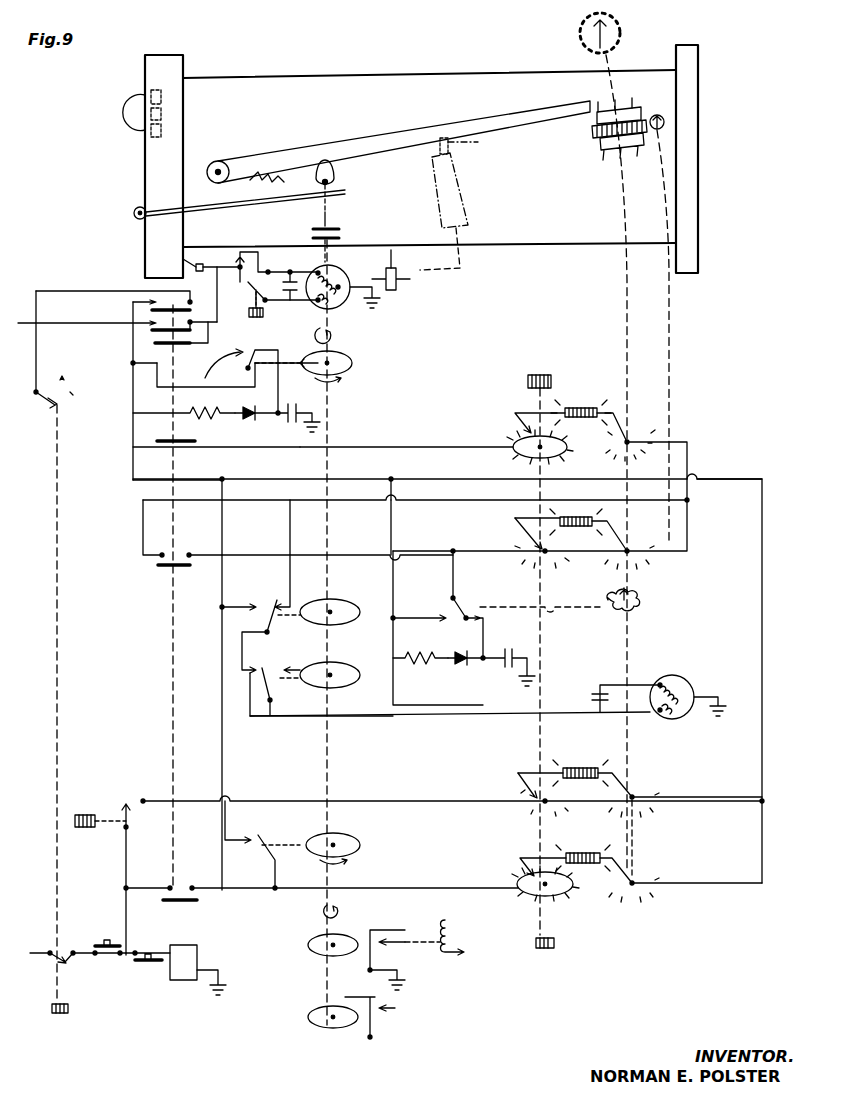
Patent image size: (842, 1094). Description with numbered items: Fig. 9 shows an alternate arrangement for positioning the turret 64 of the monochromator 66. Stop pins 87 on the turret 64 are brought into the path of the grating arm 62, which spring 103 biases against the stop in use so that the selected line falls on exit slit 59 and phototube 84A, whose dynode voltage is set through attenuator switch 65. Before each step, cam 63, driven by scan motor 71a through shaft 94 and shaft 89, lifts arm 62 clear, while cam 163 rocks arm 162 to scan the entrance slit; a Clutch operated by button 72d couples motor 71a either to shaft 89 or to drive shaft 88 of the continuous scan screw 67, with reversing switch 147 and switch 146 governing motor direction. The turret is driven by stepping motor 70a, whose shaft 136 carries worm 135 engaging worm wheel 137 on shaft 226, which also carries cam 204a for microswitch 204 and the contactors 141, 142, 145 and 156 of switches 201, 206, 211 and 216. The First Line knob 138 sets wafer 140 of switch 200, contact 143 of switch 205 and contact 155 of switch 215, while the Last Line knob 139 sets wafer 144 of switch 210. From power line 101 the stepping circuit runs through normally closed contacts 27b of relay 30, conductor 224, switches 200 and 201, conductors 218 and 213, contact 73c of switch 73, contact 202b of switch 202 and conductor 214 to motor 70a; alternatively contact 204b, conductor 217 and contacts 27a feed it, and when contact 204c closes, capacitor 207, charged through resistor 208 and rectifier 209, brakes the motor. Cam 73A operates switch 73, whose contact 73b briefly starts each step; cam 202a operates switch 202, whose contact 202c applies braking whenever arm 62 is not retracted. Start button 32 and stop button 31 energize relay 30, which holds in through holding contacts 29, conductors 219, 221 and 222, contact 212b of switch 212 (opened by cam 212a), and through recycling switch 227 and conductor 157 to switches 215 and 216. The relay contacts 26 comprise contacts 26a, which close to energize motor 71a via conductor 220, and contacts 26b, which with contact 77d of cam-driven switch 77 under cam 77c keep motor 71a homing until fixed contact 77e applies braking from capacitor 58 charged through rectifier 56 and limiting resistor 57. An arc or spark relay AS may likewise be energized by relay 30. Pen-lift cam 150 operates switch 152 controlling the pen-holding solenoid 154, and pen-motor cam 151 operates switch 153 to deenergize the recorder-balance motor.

The exit slit 59 is at (166, 112).
The phototube 84A is at (122, 118).
The grating arm 62 is at (398, 138).
The cam 63 is at (336, 170).
The turret 64 is at (638, 112).
The attenuator switch 65 is at (578, 38).
The monochromator 66 is at (507, 203).
The continuous scan screw 67 is at (471, 146).
The stop pins 87 is at (618, 154).
The drive shaft 88 is at (440, 285).
The drive shaft 89 is at (322, 210).
The power line 101 is at (50, 325).
The spring 103 is at (262, 178).
The worm 135 is at (664, 118).
The motor shaft 136 is at (672, 325).
The worm wheel 137 is at (590, 132).
The First Line knob 138 is at (524, 375).
The Last Line knob 139 is at (556, 943).
The wafer 140 is at (512, 440).
The movable contact 141 is at (628, 440).
The movable contact 142 is at (628, 549).
The contact 143 is at (514, 520).
The shorting wafer 144 is at (520, 890).
The contactor 145 is at (630, 878).
The switch 146 is at (262, 292).
The reversing switch 147 is at (238, 248).
The pen-lift cam 150 is at (308, 942).
The pen-motor cam 151 is at (308, 1014).
The switch 152 is at (402, 927).
The switch 153 is at (373, 998).
The coil 154 is at (452, 932).
The movable contact 155 is at (520, 790).
The movable contact 156 is at (630, 790).
The conductor 157 is at (445, 800).
The arm 162 is at (200, 205).
The cam 163 is at (330, 184).
The First Line switch 200 is at (512, 413).
The rotary switch 201 is at (718, 436).
The switch 202 is at (303, 651).
The cam 202a is at (340, 672).
The contact 202b is at (252, 672).
The contact 202c is at (290, 672).
The microswitch 204 is at (493, 601).
The cam 204a is at (620, 612).
The contact 204b is at (437, 628).
The contact 204c is at (487, 622).
The switch 205 is at (512, 578).
The rotary switch 206 is at (593, 583).
The capacitor 207 is at (510, 670).
The resistor 208 is at (422, 664).
The rectifier 209 is at (462, 664).
The Last Line switch 210 is at (490, 870).
The switch 211 is at (703, 869).
The switch 212 is at (291, 826).
The cam 212a is at (345, 843).
The contact 212b is at (248, 842).
The conductor 213 is at (290, 520).
The conductor 214 is at (395, 718).
The switch 215 is at (518, 766).
The switch 216 is at (695, 771).
The conductor 217 is at (450, 570).
The conductor 218 is at (403, 510).
The conductor 219 is at (362, 888).
The conductor 220 is at (223, 307).
The conductor 221 is at (163, 888).
The conductor 222 is at (126, 902).
The conductor 224 is at (408, 447).
The shaft 226 is at (622, 318).
The recycling switch 227 is at (165, 833).
The switch 26 is at (180, 312).
The contacts 26a is at (178, 333).
The contacts 26b is at (165, 345).
The contacts 27a is at (178, 553).
The contacts 27b is at (178, 448).
The holding contacts 29 is at (192, 903).
The relay 30 is at (190, 980).
The stop button 31 is at (145, 965).
The start button 32 is at (92, 940).
The rectifier 56 is at (250, 420).
The limiting resistor 57 is at (210, 420).
The capacitor 58 is at (290, 430).
The stepping motor 70a is at (690, 680).
The scan motor 71a is at (344, 302).
The push button 72d is at (196, 258).
The switch 73 is at (269, 581).
The cam 73A is at (338, 610).
The contact 73b is at (238, 610).
The contact 73c is at (282, 600).
The cam-driven switch 77 is at (259, 381).
The cam 77c is at (352, 363).
The contact 77d is at (206, 369).
The fixed contact 77e is at (288, 370).
The shaft 94 is at (342, 772).
The auxiliary solenoid AS is at (89, 1036).
The clutch Clutch is at (342, 234).